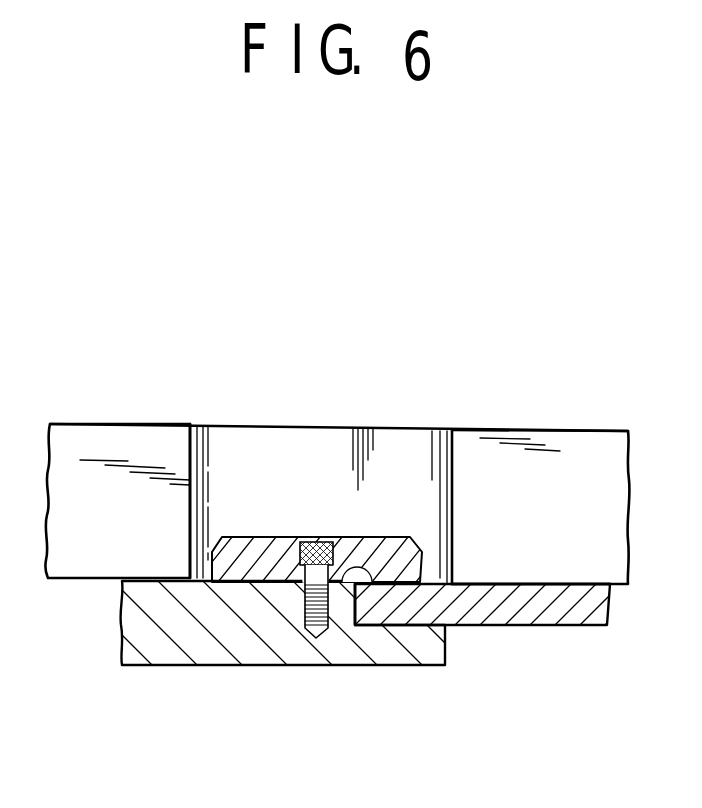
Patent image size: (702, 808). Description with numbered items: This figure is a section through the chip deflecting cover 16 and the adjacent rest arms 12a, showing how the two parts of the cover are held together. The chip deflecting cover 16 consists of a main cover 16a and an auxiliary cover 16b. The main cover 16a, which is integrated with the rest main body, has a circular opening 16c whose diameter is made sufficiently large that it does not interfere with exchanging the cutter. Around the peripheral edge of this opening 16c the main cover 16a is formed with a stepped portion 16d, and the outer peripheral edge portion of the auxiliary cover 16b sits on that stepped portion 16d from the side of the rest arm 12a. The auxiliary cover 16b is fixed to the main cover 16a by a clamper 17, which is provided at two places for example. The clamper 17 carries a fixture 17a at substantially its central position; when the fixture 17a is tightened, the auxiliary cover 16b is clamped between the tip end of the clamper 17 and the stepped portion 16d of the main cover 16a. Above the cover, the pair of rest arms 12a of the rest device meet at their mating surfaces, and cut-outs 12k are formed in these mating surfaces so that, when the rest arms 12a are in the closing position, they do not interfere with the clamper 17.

The rest arm 12a is at (90, 438).
The cut-out 12k is at (447, 430).
The chip deflecting cover 16 is at (334, 639).
The main cover 16a is at (373, 643).
The auxiliary cover 16b is at (491, 613).
The circular opening 16c is at (480, 617).
The stepped portion 16d is at (403, 623).
The clamper 17 is at (407, 538).
The fixture 17a is at (312, 540).